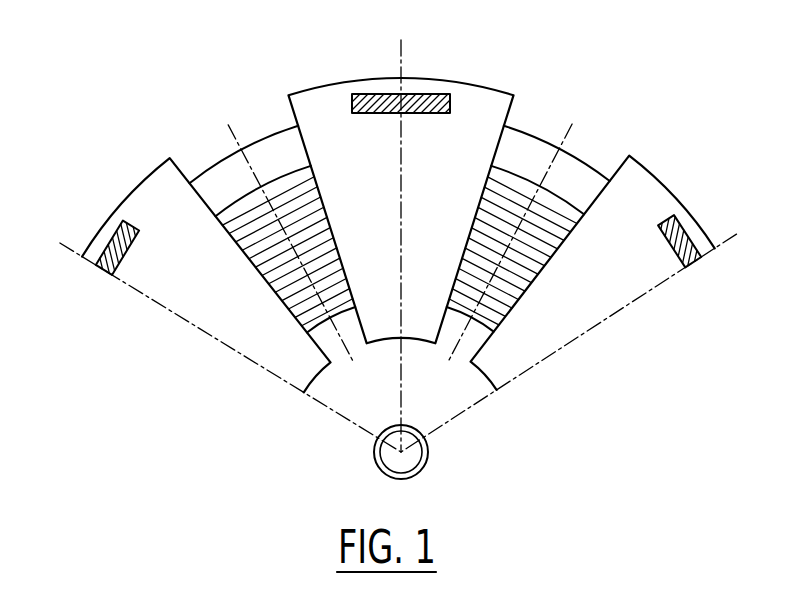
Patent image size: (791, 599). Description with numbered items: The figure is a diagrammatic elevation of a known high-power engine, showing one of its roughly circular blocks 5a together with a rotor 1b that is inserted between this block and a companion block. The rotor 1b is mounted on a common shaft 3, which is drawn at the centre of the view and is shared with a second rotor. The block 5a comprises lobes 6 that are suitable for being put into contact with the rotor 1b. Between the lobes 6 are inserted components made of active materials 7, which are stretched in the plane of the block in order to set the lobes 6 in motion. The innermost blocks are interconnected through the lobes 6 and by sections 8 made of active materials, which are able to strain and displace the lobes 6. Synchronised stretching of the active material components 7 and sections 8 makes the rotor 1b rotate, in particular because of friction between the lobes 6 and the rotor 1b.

The rotor 1b is at (573, 188).
The common shaft 3 is at (427, 465).
The block 5a is at (485, 120).
The lobes 6 is at (398, 216).
The components made of active materials 7 is at (290, 190).
The sections made of active materials 8 is at (432, 98).